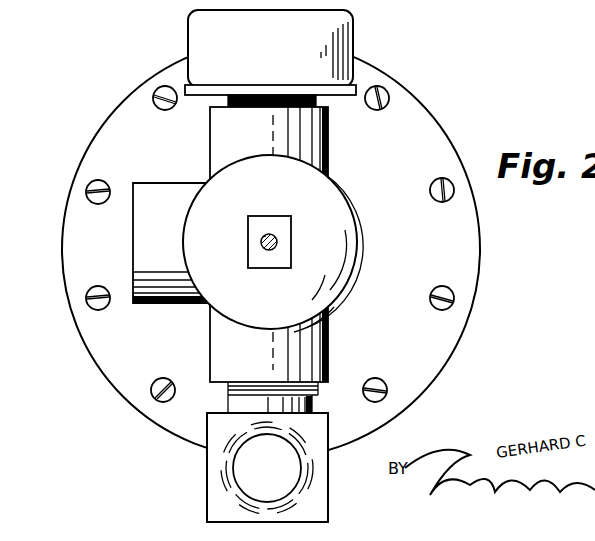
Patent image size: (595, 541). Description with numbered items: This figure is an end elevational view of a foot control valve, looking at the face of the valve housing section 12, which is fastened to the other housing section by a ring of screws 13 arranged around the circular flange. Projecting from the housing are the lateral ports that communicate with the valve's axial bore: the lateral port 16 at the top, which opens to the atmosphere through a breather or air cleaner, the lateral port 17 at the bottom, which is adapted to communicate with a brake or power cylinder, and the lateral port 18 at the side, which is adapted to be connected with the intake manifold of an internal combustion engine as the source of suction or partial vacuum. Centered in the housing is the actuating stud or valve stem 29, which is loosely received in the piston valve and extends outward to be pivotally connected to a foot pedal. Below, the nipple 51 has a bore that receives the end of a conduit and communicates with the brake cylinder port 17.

The valve housing section 12 is at (132, 116).
The screws 13 is at (385, 390).
The lateral port 16 is at (238, 103).
The lateral port 17 is at (228, 386).
The lateral port 18 is at (133, 255).
The actuating stud or valve stem 29 is at (277, 242).
The nipple 51 is at (323, 477).